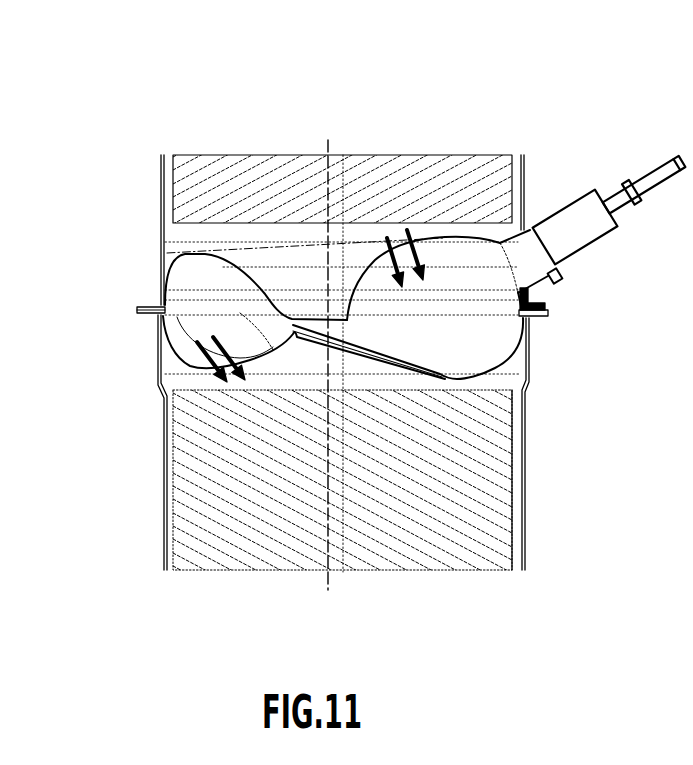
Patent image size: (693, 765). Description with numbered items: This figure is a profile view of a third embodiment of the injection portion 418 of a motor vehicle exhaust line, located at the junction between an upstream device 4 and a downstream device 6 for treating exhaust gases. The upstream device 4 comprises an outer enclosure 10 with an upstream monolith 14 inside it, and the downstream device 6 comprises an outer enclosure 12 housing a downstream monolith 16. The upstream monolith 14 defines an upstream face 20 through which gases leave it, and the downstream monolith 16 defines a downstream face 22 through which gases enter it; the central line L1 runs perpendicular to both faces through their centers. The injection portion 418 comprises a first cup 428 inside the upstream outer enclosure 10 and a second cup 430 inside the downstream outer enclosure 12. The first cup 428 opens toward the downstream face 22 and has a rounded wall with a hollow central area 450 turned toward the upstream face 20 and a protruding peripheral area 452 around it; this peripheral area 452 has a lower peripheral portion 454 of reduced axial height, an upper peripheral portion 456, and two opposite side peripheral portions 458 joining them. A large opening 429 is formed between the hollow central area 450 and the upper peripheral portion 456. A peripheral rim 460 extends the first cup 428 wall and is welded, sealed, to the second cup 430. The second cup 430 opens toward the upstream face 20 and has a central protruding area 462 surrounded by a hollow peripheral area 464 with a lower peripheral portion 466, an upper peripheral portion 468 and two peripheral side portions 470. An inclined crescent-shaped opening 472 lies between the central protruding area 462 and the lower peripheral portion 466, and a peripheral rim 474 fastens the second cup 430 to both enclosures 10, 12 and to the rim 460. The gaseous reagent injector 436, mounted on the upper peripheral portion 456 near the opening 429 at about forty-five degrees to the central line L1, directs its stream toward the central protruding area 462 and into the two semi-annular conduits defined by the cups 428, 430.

The upstream exhaust gas treatment device 4 is at (546, 165).
The downstream exhaust gas treatment device 6 is at (563, 481).
The upstream outer enclosure 10 is at (512, 195).
The downstream outer enclosure 12 is at (507, 442).
The upstream monolith 14 is at (516, 172).
The downstream monolith 16 is at (497, 537).
The upstream face 20 is at (312, 222).
The downstream face 22 is at (397, 390).
The central line L1 is at (328, 183).
The injection portion 418 is at (560, 292).
The first cup 428 is at (167, 262).
The large opening 429 is at (400, 237).
The second cup 430 is at (154, 343).
The gaseous reagent injector 436 is at (596, 190).
The hollow central area 450 is at (302, 303).
The protruding peripheral area 452 is at (372, 238).
The lower peripheral portion 454 is at (180, 256).
The upper peripheral portion 456 is at (451, 240).
The side peripheral portions 458 is at (242, 268).
The peripheral rim 460 is at (147, 307).
The central protruding area 462 is at (276, 356).
The hollow peripheral area 464 is at (348, 358).
The lower peripheral portion 466 is at (203, 370).
The upper peripheral portion 468 is at (450, 381).
The peripheral side portions 470 is at (297, 340).
The opening 472 is at (183, 368).
The peripheral rim 474 is at (122, 313).